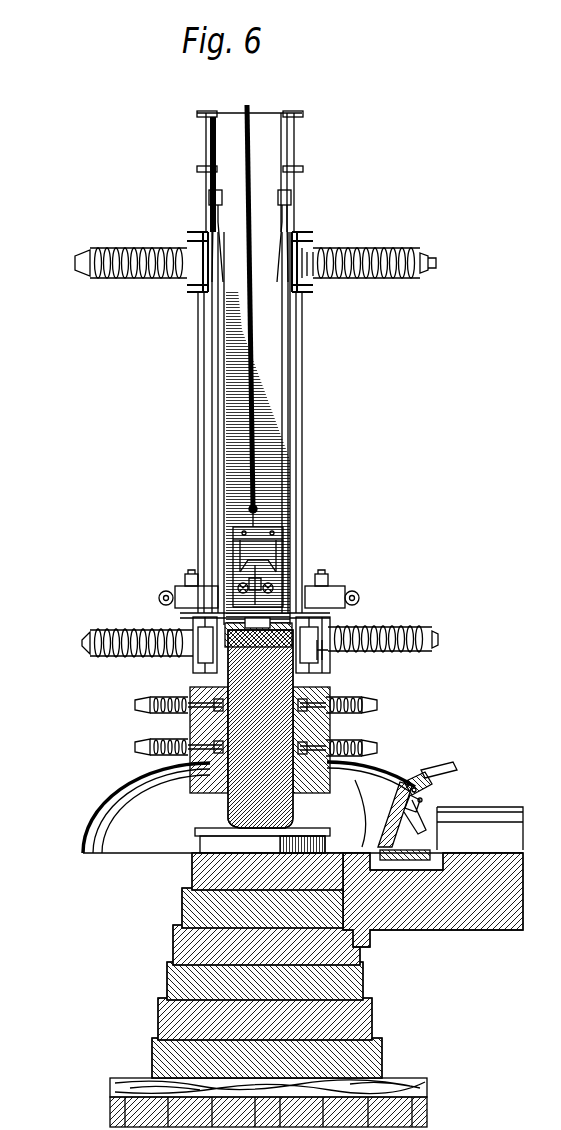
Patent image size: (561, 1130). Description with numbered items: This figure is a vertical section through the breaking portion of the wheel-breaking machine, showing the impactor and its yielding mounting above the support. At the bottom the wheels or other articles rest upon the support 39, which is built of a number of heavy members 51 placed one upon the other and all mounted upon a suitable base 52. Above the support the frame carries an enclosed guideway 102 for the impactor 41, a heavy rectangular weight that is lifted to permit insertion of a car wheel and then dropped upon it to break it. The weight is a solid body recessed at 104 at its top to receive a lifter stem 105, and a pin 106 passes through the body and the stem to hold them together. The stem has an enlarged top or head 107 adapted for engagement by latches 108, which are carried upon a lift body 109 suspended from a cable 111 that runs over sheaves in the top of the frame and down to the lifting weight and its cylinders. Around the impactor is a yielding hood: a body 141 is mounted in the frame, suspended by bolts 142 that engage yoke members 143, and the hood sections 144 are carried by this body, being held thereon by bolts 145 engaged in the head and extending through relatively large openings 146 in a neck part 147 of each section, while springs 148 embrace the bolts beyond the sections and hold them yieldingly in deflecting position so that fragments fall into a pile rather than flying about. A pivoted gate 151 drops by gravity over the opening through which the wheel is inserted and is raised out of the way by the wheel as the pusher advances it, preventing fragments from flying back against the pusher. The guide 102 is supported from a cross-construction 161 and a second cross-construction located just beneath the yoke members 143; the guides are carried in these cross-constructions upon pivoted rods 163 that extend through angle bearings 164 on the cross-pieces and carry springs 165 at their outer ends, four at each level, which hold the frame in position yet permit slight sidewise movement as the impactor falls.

The support 39 is at (353, 982).
The impactor 41 is at (277, 687).
The heavy members 51 is at (383, 1052).
The base 52 is at (427, 1085).
The guideway 102 is at (217, 448).
The recess 104 is at (303, 603).
The lifter stem 105 is at (280, 590).
The pin 106 is at (300, 660).
The head 107 is at (268, 560).
The latches 108 is at (262, 536).
The lift body 109 is at (256, 516).
The cable 111 is at (257, 357).
The body 141 is at (337, 755).
The bolts 142 is at (195, 667).
The yoke members 143 is at (190, 600).
The hood sections 144 is at (112, 860).
The bolts 145 is at (190, 778).
The openings 146 is at (170, 768).
The neck part 147 is at (327, 723).
The springs 148 is at (160, 720).
The pivoted gate 151 is at (430, 805).
The cross-construction 161 is at (196, 283).
The pivoted rods 163 is at (440, 638).
The angle bearings 164 is at (337, 625).
The springs 165 is at (400, 624).